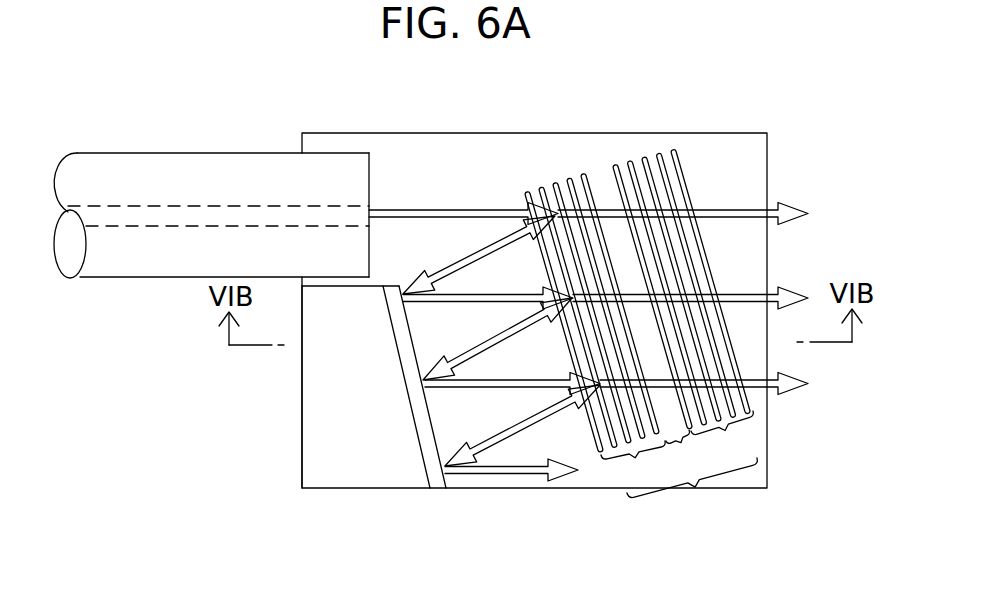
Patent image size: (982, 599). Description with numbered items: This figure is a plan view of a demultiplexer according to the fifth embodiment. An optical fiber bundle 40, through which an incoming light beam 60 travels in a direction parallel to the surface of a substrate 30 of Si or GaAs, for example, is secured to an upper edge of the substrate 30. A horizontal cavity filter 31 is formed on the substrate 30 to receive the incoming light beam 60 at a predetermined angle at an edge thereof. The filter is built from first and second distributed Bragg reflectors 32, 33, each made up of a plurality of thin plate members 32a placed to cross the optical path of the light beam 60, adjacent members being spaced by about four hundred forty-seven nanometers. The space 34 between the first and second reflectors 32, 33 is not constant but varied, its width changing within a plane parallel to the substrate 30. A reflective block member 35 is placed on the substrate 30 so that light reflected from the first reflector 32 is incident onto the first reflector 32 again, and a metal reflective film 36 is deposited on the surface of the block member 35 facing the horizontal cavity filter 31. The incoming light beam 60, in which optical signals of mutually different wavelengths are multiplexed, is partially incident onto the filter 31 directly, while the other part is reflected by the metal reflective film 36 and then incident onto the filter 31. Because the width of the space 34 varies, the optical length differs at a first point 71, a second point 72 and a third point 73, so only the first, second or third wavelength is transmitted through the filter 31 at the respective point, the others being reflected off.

The substrate 30 is at (767, 148).
The horizontal cavity filter 31 is at (634, 319).
The first distributed Bragg reflector 32 is at (588, 319).
The thin plate member 32a is at (580, 176).
The second distributed Bragg reflector 33 is at (653, 278).
The space 34 is at (683, 454).
The reflective block member 35 is at (303, 453).
The metal reflective film 36 is at (418, 438).
The optical fiber bundle 40 is at (235, 152).
The incoming light beam 60 is at (430, 210).
The first point 71 is at (540, 188).
The second point 72 is at (580, 350).
The third point 73 is at (618, 390).